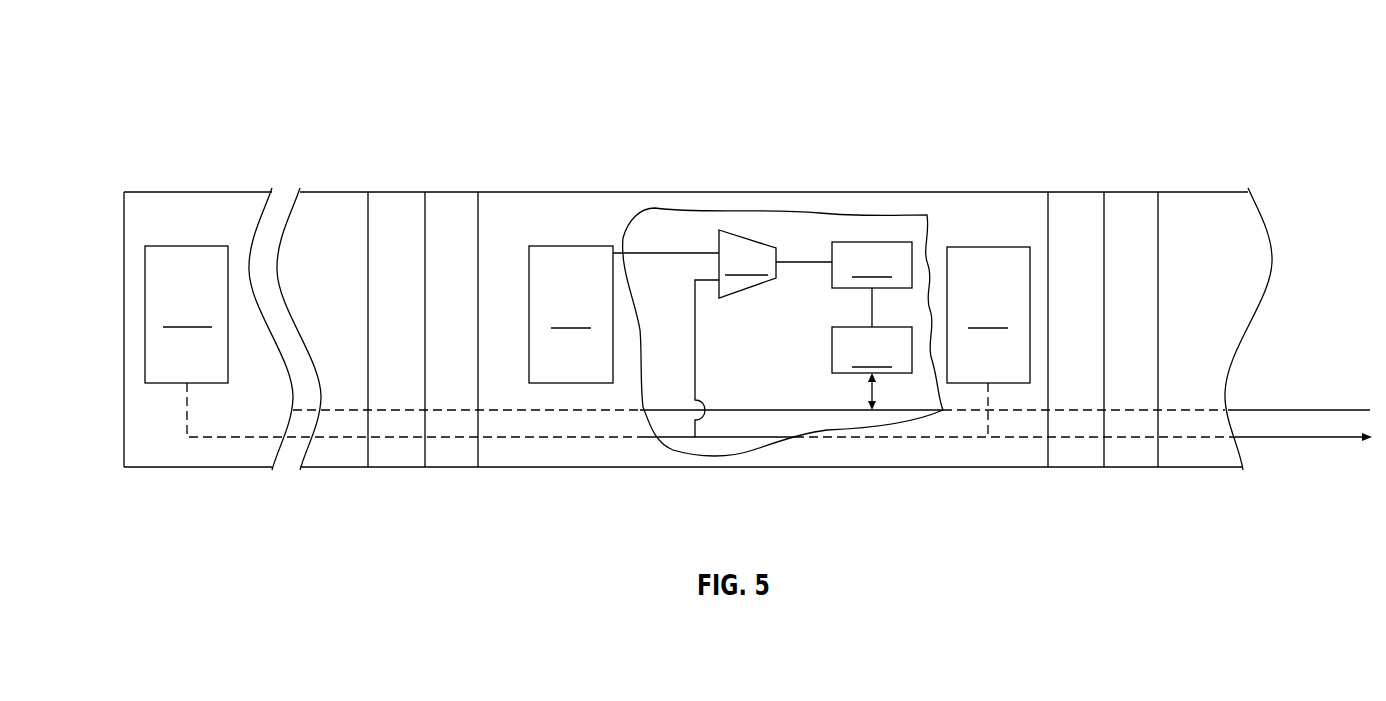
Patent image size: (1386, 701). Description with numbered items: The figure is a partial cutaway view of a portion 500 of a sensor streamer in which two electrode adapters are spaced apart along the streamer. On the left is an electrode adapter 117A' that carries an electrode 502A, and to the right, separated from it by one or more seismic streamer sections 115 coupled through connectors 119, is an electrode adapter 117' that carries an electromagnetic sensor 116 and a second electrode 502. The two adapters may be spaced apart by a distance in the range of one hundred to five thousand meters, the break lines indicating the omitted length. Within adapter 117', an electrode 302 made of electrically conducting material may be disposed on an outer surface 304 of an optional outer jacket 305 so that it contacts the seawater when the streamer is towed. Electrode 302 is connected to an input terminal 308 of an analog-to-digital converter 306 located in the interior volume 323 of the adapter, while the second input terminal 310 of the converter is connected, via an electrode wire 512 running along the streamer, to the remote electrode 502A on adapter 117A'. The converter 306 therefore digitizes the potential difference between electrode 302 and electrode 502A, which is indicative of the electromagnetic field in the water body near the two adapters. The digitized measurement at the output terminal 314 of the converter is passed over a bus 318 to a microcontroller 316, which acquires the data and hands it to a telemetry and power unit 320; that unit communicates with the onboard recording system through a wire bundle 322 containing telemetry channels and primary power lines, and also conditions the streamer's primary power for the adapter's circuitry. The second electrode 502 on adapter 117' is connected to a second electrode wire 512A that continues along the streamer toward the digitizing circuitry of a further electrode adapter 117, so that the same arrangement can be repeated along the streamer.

The portion of a sensor streamer 500 is at (238, 46).
The electrode adapter 117A' is at (198, 155).
The seismic streamer section 115 is at (323, 181).
The connector 119 is at (400, 190).
The outer surface 304 is at (561, 181).
The electrode adapter 117' is at (695, 150).
The outer jacket 305 is at (957, 210).
The interior volume 323 is at (833, 222).
The electromagnetic sensor 116 is at (610, 240).
The electrode 302 is at (571, 314).
The analog-to-digital converter 306 is at (747, 264).
The input terminal 308 is at (718, 251).
The input terminal 310 is at (702, 285).
The output terminal 314 is at (805, 245).
The microcontroller 316 is at (872, 265).
The bus 318 is at (802, 263).
The telemetry and power unit 320 is at (872, 368).
The wire bundle 322 is at (777, 410).
The second electrode 502 is at (988, 342).
The electrode 502A is at (186, 314).
The electrode wire 512 is at (612, 440).
The second electrode wire 512A is at (1285, 440).
The electrode adapter 117 is at (827, 518).